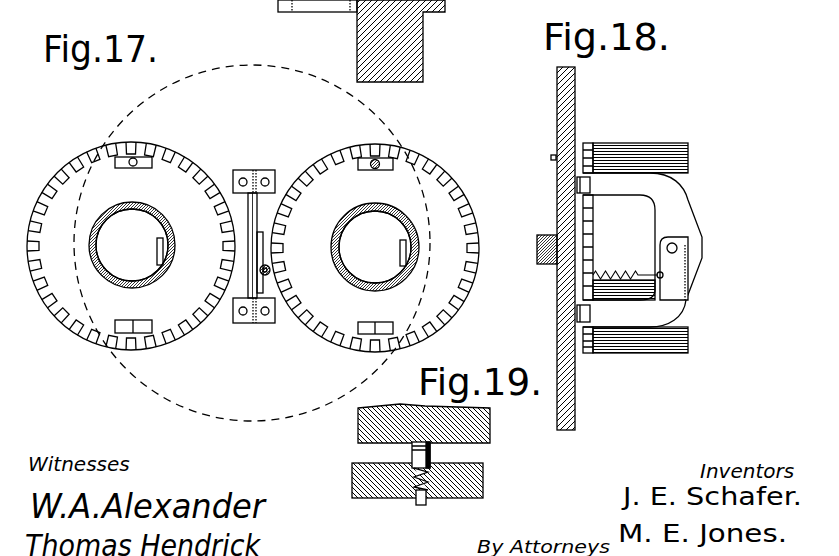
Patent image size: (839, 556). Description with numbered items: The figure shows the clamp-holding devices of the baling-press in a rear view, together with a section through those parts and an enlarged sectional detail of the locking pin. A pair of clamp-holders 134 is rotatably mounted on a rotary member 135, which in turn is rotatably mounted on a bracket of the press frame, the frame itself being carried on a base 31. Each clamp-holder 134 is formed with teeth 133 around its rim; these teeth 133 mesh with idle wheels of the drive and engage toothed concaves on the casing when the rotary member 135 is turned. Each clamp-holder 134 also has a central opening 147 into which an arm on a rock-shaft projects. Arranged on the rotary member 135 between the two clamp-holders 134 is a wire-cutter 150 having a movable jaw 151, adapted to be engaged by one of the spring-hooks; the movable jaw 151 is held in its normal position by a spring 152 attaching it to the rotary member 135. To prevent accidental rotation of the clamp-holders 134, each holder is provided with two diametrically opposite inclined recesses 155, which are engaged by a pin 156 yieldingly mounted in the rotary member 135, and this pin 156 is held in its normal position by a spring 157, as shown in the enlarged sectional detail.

In FIG. 17, the base 31 is at (405, 45).
In FIG. 17, the teeth 133 is at (184, 153).
In FIG. 17, the clamp-holder 134 is at (254, 233).
In FIG. 17, the rotary member 135 is at (252, 243).
In FIG. 18, the rotary member 135 is at (560, 110).
In FIG. 17, the central opening 147 is at (253, 246).
In FIG. 18, the wire-cutter 150 is at (668, 210).
In FIG. 17, the movable jaw 151 is at (259, 258).
In FIG. 18, the movable jaw 151 is at (680, 277).
In FIG. 17, the spring 152 is at (269, 272).
In FIG. 18, the spring 152 is at (615, 272).
In FIG. 17, the inclined recesses 155 is at (378, 167).
In FIG. 17, the pin 156 is at (380, 160).
In FIG. 19, the pin 156 is at (412, 450).
In FIG. 19, the spring 157 is at (415, 497).